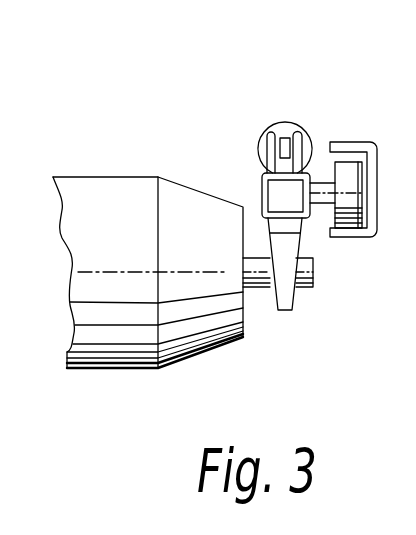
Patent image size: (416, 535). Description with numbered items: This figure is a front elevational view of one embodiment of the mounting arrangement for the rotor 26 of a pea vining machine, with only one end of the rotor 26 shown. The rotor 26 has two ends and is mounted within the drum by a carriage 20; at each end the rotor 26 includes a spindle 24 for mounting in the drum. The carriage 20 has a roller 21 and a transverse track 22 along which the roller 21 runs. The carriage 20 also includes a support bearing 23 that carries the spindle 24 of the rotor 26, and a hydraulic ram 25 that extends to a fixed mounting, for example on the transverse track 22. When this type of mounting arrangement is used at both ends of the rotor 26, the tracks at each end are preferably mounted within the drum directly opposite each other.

The carriage 20 is at (271, 207).
The roller 21 is at (350, 210).
The transverse track 22 is at (354, 142).
The support bearing 23 is at (283, 280).
The spindle 24 is at (263, 282).
The hydraulic ram 25 is at (282, 122).
The rotor 26 is at (117, 337).